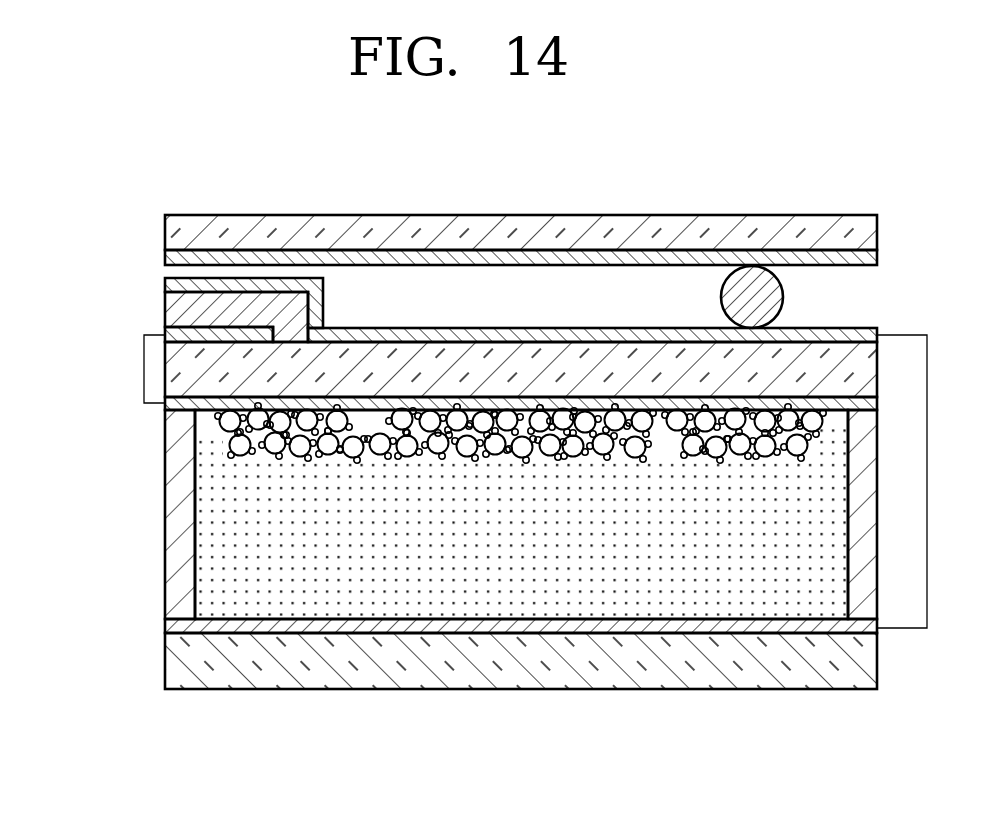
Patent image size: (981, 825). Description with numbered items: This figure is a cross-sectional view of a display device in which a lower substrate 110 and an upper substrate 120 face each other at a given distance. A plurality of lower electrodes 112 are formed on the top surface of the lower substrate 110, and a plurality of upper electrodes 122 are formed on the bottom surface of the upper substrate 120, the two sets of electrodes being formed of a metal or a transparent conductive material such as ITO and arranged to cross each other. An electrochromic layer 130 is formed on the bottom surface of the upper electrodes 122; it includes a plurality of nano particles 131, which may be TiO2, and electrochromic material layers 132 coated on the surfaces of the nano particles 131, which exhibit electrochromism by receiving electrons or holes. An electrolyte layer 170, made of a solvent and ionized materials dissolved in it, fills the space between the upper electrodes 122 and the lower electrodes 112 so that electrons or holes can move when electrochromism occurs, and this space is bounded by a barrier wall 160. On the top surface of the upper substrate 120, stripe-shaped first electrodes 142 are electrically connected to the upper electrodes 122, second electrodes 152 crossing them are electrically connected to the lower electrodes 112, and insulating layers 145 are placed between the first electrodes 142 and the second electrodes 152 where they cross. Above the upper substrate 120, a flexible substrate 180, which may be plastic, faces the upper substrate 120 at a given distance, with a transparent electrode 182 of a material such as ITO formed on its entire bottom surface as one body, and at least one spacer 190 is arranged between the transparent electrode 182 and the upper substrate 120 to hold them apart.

The lower substrate 110 is at (170, 666).
The lower electrodes 112 is at (170, 626).
The upper substrate 120 is at (451, 372).
The upper electrodes 122 is at (523, 405).
The electrochromic layer 130 is at (80, 430).
The nano particles 131 is at (226, 430).
The electrochromic material layers 132 is at (226, 455).
The first electrodes 142 is at (177, 323).
The insulating layers 145 is at (165, 299).
The second electrodes 152 is at (165, 280).
The barrier wall 160 is at (176, 533).
The electrolyte layer 170 is at (206, 573).
The flexible substrate 180 is at (194, 222).
The transparent electrode 182 is at (263, 262).
The spacer 190 is at (786, 297).